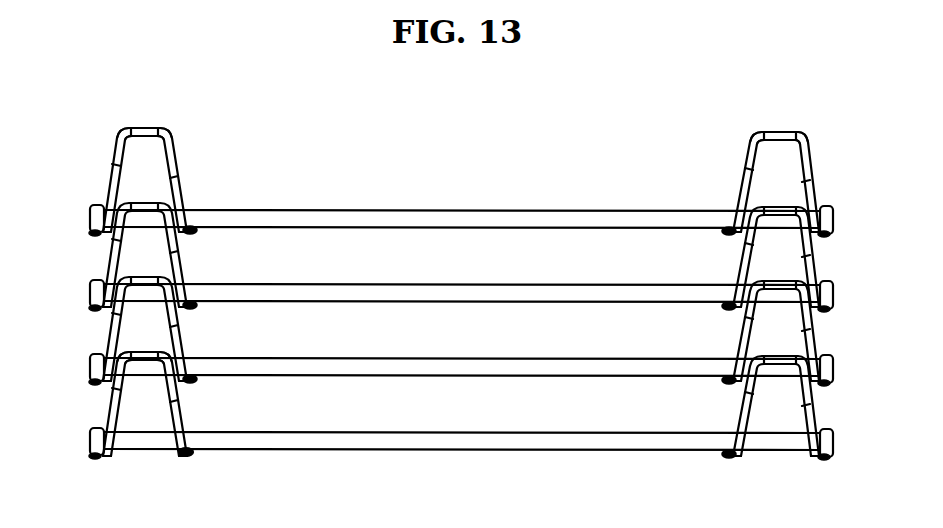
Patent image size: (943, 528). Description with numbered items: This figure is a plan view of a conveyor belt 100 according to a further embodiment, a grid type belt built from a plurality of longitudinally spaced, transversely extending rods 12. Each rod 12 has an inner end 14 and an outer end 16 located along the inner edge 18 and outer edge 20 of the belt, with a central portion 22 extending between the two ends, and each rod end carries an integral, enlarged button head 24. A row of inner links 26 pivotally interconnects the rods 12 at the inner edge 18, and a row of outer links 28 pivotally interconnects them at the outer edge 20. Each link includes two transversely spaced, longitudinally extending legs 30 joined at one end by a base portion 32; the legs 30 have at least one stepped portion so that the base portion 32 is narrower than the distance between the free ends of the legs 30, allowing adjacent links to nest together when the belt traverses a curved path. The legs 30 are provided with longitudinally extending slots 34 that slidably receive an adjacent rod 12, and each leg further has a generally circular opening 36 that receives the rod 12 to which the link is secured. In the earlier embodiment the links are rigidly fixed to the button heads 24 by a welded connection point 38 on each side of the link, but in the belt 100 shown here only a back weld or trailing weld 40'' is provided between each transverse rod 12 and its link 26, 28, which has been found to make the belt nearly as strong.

The conveyor belt 100 is at (636, 94).
The transverse rods 12 is at (462, 289).
The inner end 14 is at (120, 185).
The outer end 16 is at (835, 222).
The inner edge 18 is at (85, 179).
The outer edge 20 is at (837, 185).
The central portion 22 is at (495, 202).
The button head 24 is at (91, 216).
The inner links 26 is at (167, 137).
The outer links 28 is at (773, 133).
The legs 30 is at (172, 387).
The base portion 32 is at (136, 352).
The slots 34 is at (756, 379).
The circular opening 36 is at (176, 443).
The welded connection point 38 is at (96, 270).
The back weld or trailing weld 40'' is at (465, 363).